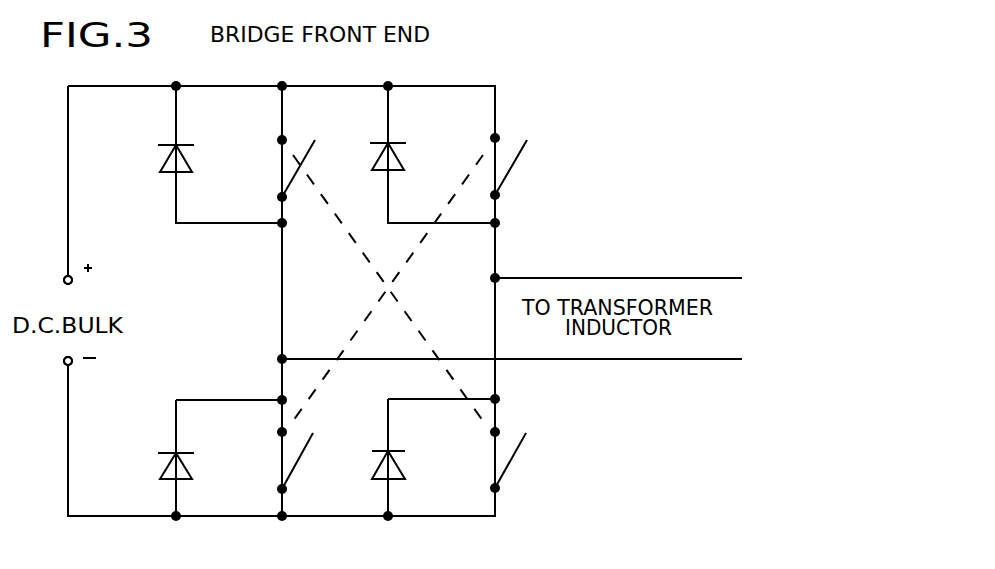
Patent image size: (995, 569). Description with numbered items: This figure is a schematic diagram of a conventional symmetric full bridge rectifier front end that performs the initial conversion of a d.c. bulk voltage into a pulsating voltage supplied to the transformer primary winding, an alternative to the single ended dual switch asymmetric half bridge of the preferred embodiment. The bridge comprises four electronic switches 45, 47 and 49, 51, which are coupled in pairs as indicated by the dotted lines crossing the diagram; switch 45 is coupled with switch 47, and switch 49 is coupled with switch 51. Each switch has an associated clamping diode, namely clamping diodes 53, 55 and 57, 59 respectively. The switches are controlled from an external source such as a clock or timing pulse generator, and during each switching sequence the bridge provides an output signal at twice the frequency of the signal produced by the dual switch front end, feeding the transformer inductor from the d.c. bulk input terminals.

The switch 45 is at (295, 171).
The switch 47 is at (517, 455).
The switch 49 is at (302, 452).
The switch 51 is at (518, 158).
The clamping diode 53 is at (177, 161).
The clamping diode 55 is at (398, 463).
The clamping diode 57 is at (170, 468).
The clamping diode 59 is at (404, 160).